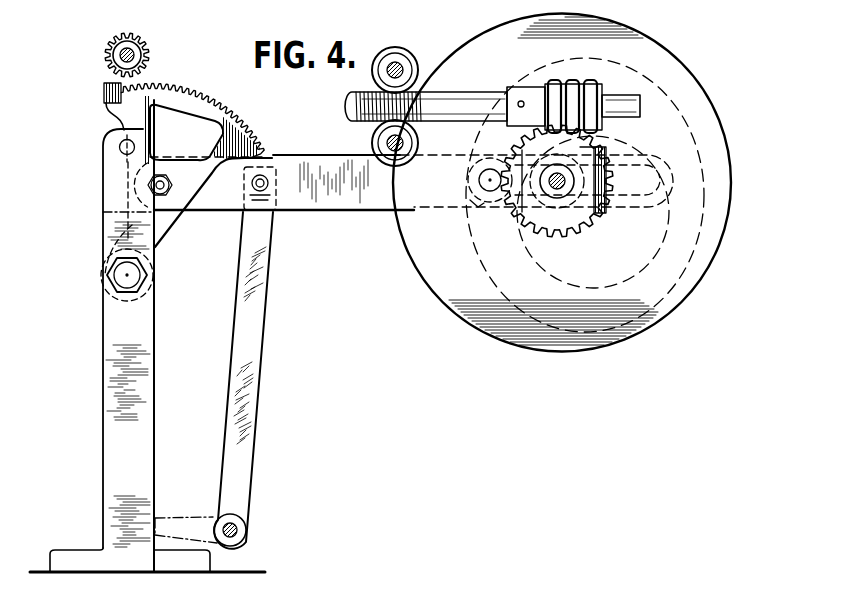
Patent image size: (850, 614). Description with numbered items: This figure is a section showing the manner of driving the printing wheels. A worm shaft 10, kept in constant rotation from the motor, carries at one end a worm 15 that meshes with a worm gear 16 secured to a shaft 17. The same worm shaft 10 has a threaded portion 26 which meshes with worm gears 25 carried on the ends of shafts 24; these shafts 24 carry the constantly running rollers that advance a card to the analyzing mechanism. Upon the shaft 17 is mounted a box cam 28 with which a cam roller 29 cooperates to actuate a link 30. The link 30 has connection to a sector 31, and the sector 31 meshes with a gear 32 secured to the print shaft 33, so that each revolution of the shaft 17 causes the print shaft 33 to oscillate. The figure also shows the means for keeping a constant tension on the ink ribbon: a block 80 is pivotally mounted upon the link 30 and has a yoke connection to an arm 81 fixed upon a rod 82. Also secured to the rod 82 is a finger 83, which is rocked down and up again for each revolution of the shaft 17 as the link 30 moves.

The worm shaft 10 is at (478, 97).
The worm 15 is at (559, 80).
The worm gear 16 is at (598, 138).
The shaft 17 is at (566, 188).
The shafts 24 is at (402, 62).
The worm gears 25 is at (394, 50).
The threaded portion 26 is at (424, 96).
The box cam 28 is at (449, 276).
The cam roller 29 is at (478, 208).
The link 30 is at (293, 202).
The sector 31 is at (106, 103).
The gear 32 is at (152, 52).
The print shaft 33 is at (128, 48).
The block 80 is at (264, 165).
The arm 81 is at (250, 346).
The rod 82 is at (249, 530).
The finger 83 is at (172, 527).